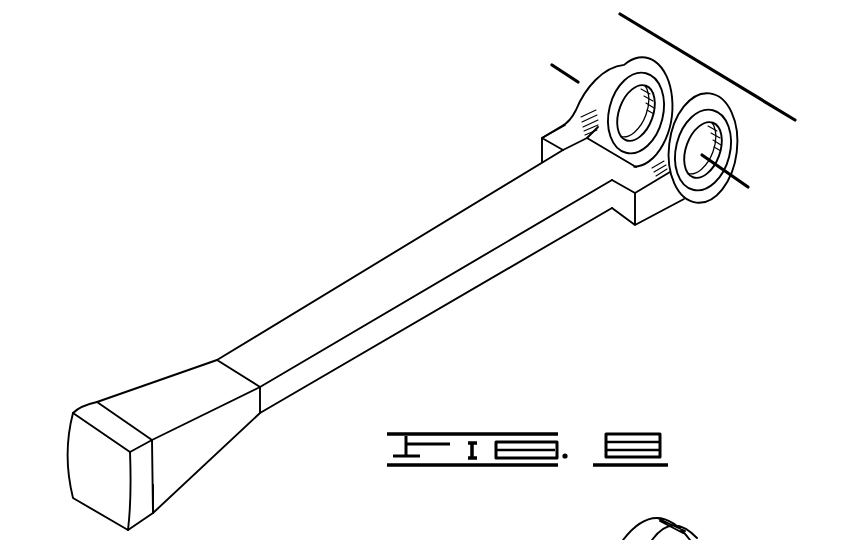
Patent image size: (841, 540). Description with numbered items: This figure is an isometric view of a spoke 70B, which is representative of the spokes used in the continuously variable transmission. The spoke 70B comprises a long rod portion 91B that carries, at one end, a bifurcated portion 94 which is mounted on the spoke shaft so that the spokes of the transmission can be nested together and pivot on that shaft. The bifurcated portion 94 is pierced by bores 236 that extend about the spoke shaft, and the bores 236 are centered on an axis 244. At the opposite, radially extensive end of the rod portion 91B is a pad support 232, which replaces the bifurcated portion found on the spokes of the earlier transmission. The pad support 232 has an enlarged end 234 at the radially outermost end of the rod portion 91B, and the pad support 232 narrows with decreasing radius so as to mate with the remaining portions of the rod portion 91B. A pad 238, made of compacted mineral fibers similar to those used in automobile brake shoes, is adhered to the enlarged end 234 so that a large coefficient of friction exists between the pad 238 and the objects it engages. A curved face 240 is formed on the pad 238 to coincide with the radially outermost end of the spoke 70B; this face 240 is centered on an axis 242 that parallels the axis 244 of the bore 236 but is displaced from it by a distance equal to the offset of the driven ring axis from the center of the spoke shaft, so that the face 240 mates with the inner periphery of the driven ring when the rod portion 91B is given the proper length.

The spoke 70B is at (381, 280).
The rod portion 91B is at (405, 312).
The bifurcated portion 94 is at (620, 70).
The bore 236 is at (688, 188).
The axis 242 is at (727, 77).
The axis of the bore 244 is at (743, 180).
The pad support 232 is at (140, 435).
The pad 238 is at (93, 415).
The curved face 240 is at (103, 483).
The enlarged end 234 is at (150, 488).